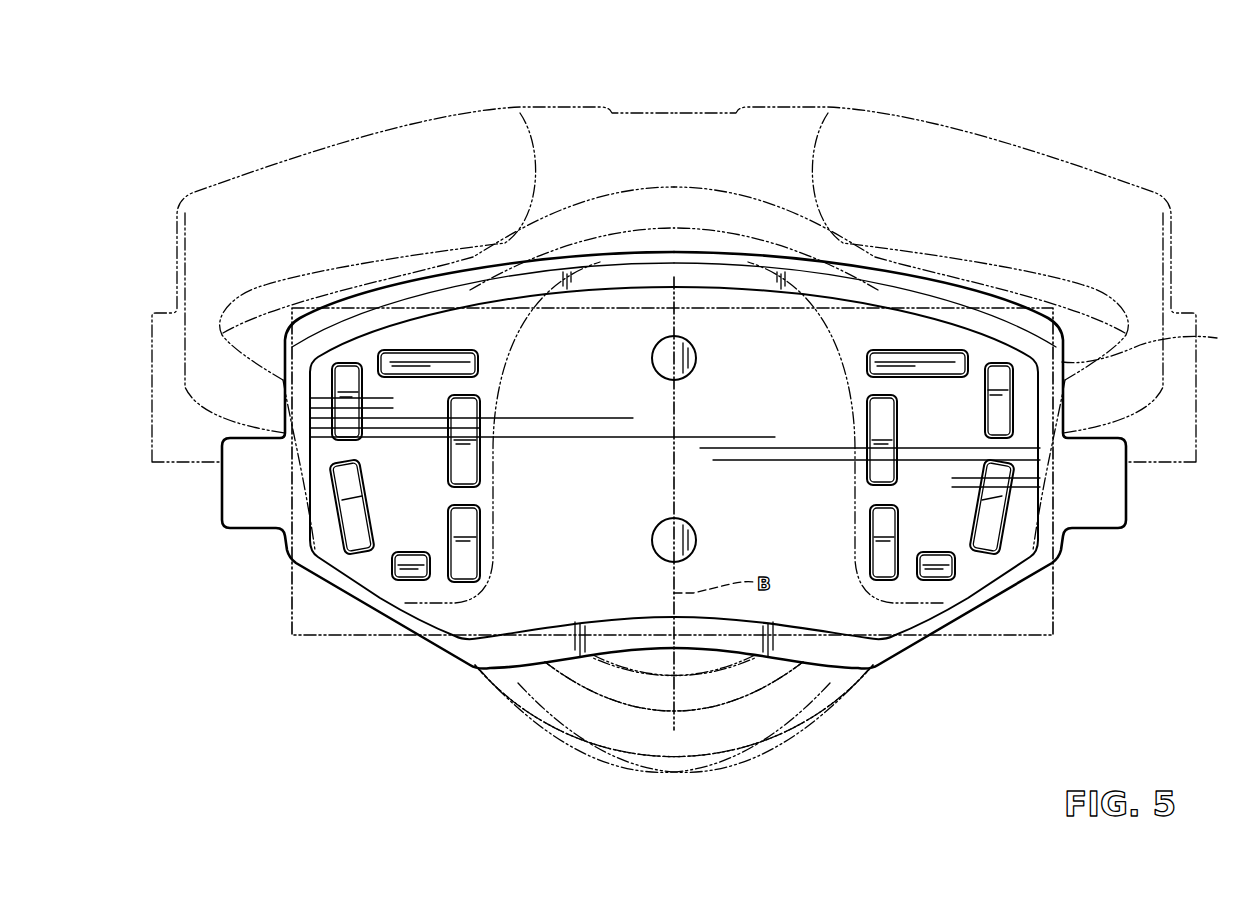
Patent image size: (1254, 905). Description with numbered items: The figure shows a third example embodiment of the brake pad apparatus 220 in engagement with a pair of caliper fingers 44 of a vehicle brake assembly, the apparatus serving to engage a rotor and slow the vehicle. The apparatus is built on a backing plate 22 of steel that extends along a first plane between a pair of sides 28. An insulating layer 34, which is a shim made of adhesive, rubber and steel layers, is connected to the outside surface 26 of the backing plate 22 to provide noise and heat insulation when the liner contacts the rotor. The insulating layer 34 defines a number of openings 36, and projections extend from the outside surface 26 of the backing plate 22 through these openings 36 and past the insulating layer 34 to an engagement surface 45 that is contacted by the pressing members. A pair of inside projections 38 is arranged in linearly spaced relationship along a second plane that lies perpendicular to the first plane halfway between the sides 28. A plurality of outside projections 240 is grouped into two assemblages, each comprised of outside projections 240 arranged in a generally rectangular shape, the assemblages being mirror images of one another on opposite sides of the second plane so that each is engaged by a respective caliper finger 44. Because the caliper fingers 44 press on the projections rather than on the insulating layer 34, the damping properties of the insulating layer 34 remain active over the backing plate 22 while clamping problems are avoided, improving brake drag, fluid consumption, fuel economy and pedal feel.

The backing plate 22 is at (487, 655).
The outside surface 26 is at (483, 290).
The sides 28 is at (285, 400).
The insulating layer 34 is at (547, 600).
The opening 36 is at (395, 375).
The inside projections 38 is at (680, 355).
The caliper fingers 44 is at (417, 590).
The engagement surface 45 is at (430, 362).
The brake pad apparatus 220 is at (1030, 126).
The outside projections 240 is at (462, 548).